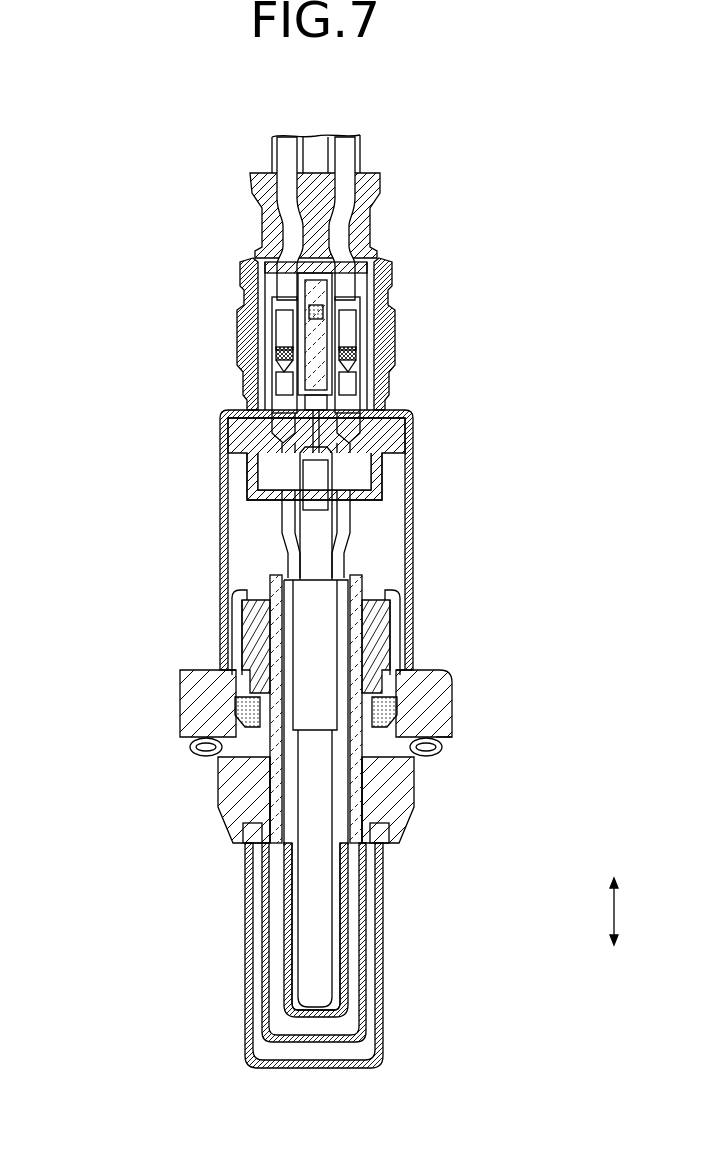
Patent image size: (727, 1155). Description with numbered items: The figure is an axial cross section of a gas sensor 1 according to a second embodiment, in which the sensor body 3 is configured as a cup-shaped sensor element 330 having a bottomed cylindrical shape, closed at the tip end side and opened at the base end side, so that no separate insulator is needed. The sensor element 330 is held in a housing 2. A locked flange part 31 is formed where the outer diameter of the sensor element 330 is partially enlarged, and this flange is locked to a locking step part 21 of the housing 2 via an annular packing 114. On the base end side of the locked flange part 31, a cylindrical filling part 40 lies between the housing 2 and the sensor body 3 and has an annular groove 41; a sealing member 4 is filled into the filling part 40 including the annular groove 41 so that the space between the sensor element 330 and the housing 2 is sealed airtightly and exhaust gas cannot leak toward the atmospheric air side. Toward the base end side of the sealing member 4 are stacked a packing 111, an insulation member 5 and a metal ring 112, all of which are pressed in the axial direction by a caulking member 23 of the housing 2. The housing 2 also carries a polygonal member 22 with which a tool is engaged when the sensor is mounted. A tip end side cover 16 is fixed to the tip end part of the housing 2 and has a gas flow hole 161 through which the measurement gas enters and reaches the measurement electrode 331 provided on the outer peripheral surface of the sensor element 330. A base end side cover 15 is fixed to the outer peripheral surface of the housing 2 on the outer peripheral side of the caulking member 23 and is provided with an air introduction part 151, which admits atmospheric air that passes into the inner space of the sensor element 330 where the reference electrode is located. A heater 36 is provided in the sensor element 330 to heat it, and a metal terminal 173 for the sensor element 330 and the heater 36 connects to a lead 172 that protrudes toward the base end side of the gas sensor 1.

The gas sensor 1 is at (68, 993).
The housing 2 is at (428, 677).
The locking step part 21 is at (250, 783).
The polygonal member 22 is at (190, 717).
The caulking member 23 is at (250, 587).
The sensor body 3 is at (349, 866).
The sensor element 330 is at (350, 885).
The measurement electrode 331 is at (282, 977).
The heater 36 is at (307, 928).
The sealing member 4 is at (410, 668).
The filling part 40 is at (260, 707).
The annular groove 41 is at (455, 700).
The insulation member 5 is at (370, 630).
The base end side cover 15 is at (222, 490).
The air introduction part 151 is at (390, 342).
The tip end side cover 16 is at (367, 967).
The gas flow hole 161 is at (250, 880).
The lead 172 is at (343, 162).
The metal terminal 173 is at (313, 440).
The packing 111 is at (250, 662).
The metal ring 112 is at (388, 600).
The packing 114 is at (365, 768).
The locked flange part 31 is at (452, 733).